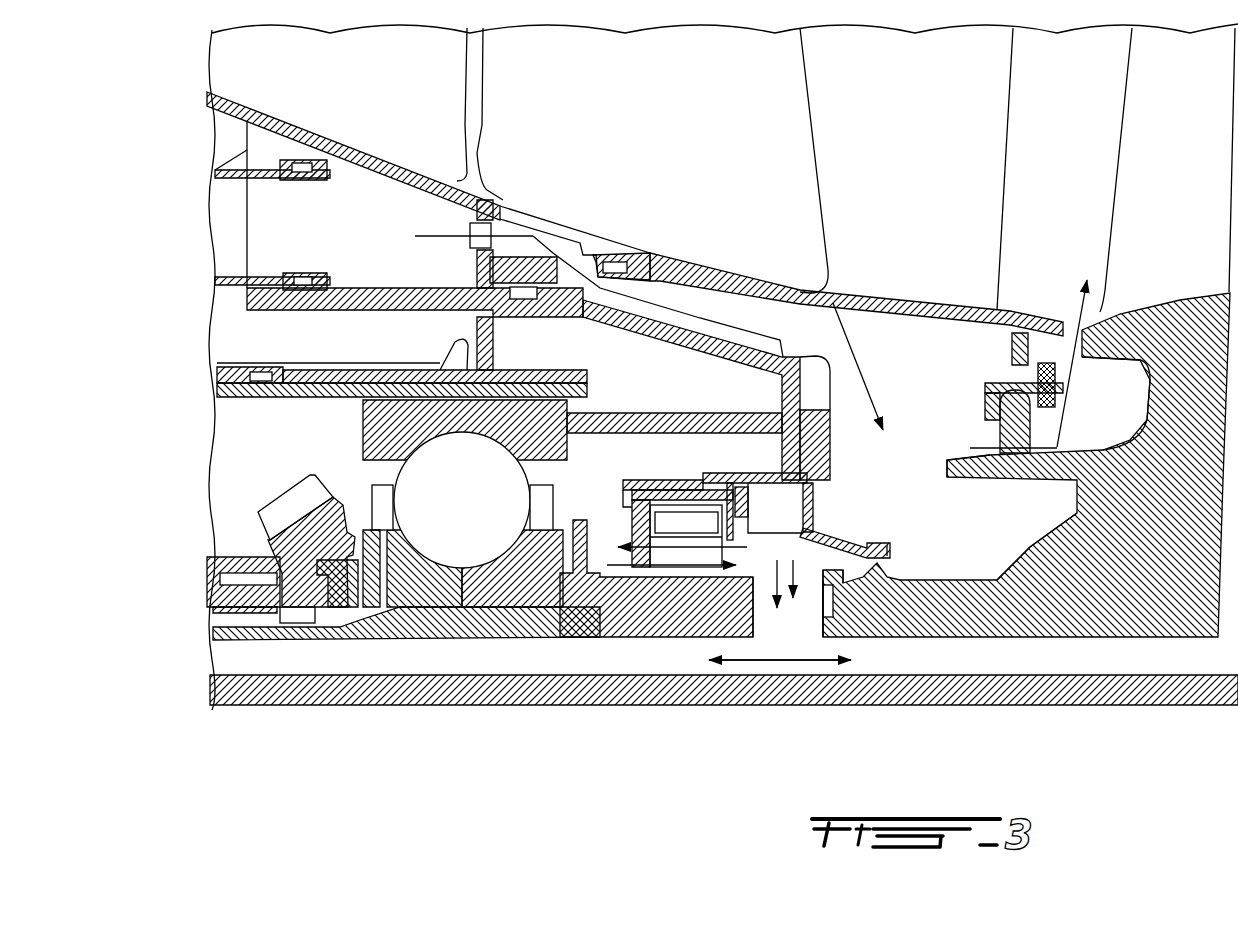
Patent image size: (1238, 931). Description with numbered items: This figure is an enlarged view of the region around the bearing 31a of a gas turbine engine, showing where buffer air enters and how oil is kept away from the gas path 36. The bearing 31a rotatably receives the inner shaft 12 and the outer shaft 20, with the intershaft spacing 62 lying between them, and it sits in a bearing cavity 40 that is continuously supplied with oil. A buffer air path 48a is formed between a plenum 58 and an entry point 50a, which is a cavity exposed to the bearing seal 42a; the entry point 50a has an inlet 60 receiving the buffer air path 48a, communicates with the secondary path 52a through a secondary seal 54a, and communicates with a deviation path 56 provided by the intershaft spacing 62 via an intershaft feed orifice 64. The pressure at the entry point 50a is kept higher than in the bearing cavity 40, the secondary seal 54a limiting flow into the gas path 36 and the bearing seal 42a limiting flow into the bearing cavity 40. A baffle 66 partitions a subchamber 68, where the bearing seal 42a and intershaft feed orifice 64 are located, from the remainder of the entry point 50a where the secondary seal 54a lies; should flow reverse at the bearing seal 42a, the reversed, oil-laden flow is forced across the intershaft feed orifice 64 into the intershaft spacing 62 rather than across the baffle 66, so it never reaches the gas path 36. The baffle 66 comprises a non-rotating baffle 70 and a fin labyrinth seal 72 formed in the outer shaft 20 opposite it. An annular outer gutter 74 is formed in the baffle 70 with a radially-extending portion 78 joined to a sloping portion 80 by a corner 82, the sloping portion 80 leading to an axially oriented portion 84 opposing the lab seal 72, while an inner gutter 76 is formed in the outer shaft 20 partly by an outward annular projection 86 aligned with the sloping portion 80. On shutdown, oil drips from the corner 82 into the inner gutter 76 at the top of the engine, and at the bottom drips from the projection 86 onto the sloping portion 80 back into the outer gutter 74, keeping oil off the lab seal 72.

The inner shaft 12 is at (262, 692).
The outer shaft 20 is at (1000, 640).
The bearing 31a is at (433, 470).
The gas path 36 is at (1080, 204).
The bearing cavity 40 is at (258, 482).
The bearing seal 42a is at (680, 522).
The buffer air path 48a is at (688, 287).
The entry point 50a is at (987, 372).
The secondary path 52a is at (1127, 417).
The secondary seal 54a is at (1000, 437).
The deviation path 56 is at (770, 667).
The plenum 58 is at (357, 222).
The inlet 60 is at (818, 372).
The intershaft spacing 62 is at (397, 660).
The intershaft feed orifice 64 is at (763, 567).
The baffle 66 is at (770, 468).
The subchamber 68 is at (803, 580).
The non-rotating baffle 70 is at (880, 532).
The lab seal 72 is at (933, 580).
The outer gutter 74 is at (737, 481).
The inner gutter 76 is at (830, 580).
The radially-extending portion 78 is at (807, 500).
The sloping portion 80 is at (858, 532).
The corner 82 is at (800, 538).
The axially oriented portion 84 is at (890, 541).
The outward annular projection 86 is at (853, 580).